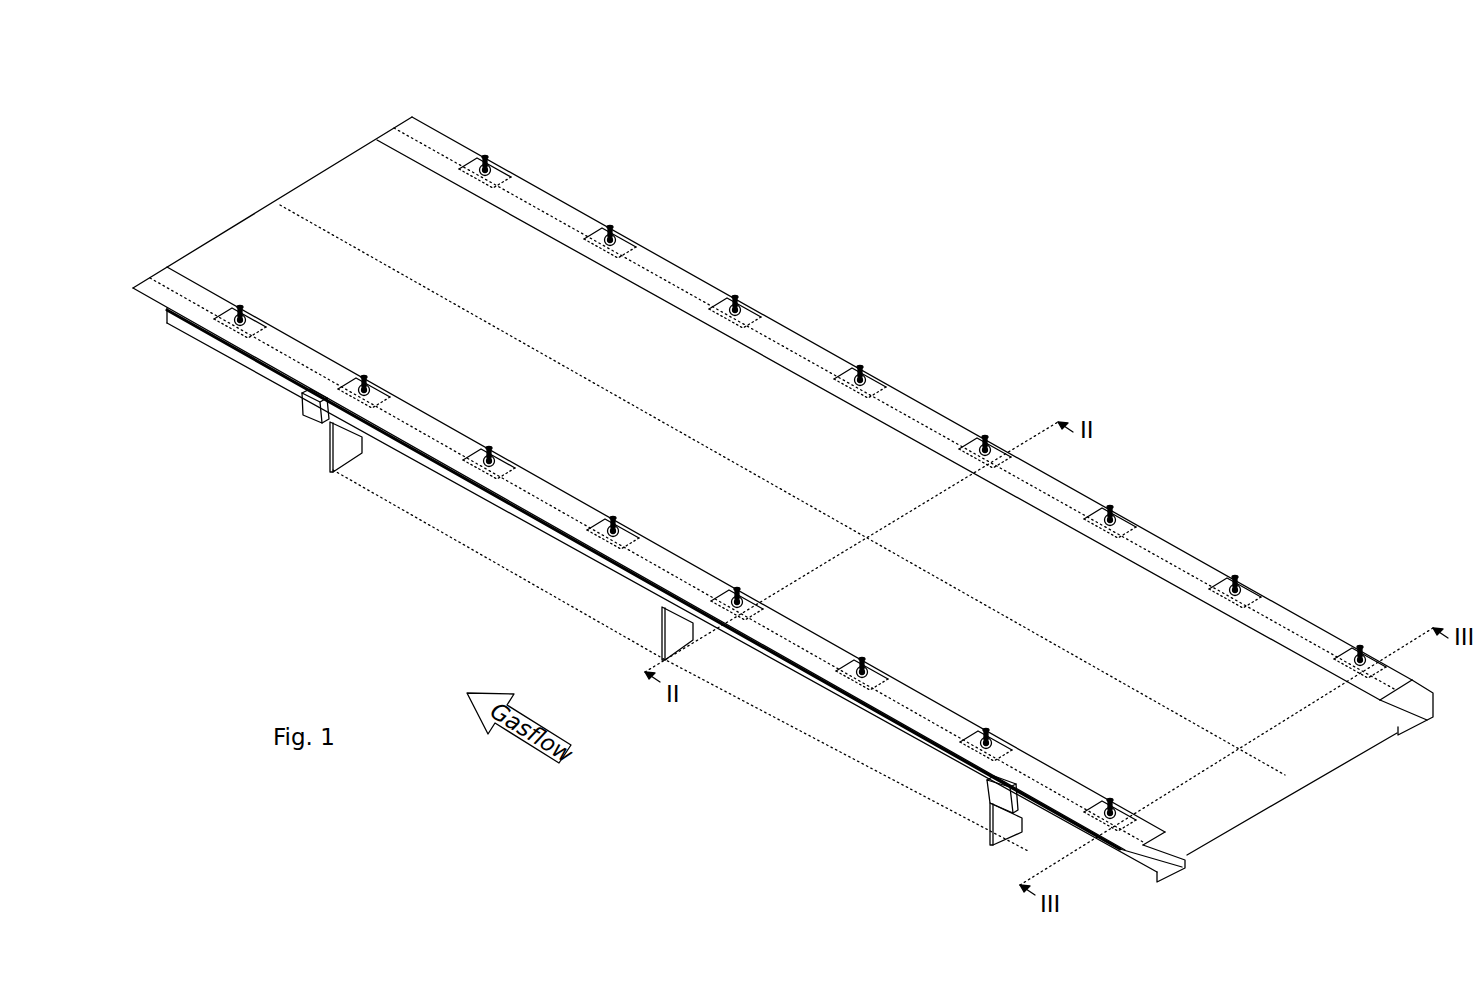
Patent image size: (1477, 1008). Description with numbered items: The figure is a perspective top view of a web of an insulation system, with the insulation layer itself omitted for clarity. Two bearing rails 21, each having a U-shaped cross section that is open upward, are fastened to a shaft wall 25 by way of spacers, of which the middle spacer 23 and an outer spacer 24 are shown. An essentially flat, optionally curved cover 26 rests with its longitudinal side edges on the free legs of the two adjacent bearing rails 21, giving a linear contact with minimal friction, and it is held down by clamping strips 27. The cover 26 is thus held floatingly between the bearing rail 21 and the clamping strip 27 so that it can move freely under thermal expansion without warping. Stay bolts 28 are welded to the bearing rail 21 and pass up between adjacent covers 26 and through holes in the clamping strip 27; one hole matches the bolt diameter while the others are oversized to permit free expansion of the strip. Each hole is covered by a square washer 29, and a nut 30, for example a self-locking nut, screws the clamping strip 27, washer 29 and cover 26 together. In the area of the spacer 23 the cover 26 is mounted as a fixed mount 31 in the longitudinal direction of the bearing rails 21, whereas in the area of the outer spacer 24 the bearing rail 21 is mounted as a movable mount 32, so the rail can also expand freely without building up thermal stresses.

The bearing rail 21 is at (1410, 730).
The spacer 23 is at (658, 630).
The spacer 24 is at (985, 835).
The shaft wall 25 is at (768, 700).
The cover 26 is at (245, 240).
The clamping strip 27 is at (422, 130).
The stay bolt 28 is at (492, 165).
The washer 29 is at (505, 178).
The nut 30 is at (483, 160).
The fixed mount 31 is at (640, 628).
The movable mount 32 is at (625, 611).